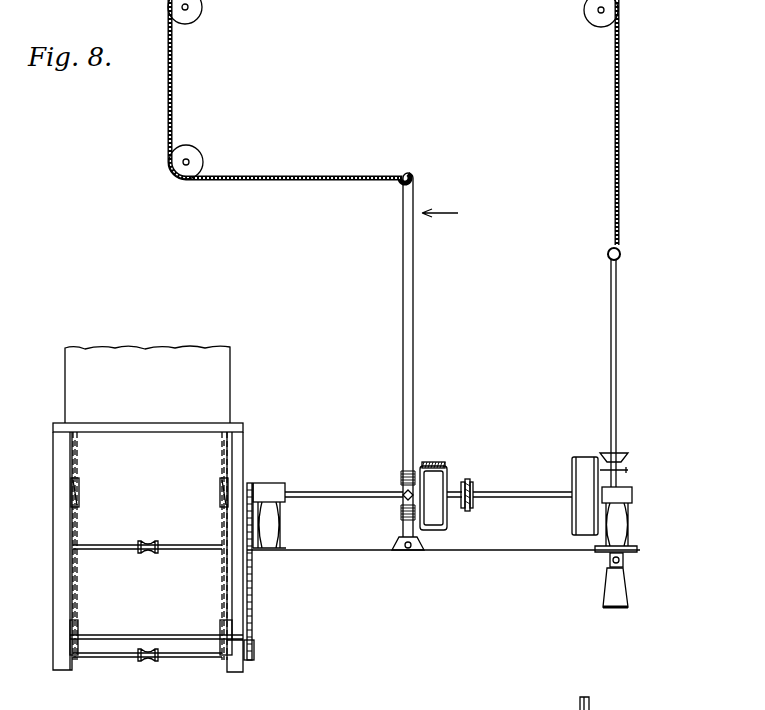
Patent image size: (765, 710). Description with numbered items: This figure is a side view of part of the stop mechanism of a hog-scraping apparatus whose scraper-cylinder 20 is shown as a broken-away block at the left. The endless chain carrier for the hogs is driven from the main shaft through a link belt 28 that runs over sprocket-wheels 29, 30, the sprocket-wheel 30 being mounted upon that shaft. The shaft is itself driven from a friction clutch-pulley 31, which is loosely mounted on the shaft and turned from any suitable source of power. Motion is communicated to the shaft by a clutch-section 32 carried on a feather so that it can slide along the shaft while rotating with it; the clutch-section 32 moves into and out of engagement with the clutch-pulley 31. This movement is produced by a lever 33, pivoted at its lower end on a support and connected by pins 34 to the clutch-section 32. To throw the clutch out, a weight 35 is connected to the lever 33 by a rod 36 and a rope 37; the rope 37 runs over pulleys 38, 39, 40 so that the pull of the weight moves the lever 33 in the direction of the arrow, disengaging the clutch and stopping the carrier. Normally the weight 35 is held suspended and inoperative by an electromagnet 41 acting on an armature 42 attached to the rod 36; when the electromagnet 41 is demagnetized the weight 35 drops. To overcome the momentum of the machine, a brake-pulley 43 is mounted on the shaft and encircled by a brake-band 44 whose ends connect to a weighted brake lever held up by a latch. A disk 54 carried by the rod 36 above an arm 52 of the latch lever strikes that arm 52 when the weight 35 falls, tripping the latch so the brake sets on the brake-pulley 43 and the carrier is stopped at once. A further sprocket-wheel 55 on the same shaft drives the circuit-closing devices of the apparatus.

The scraper-cylinder 20 is at (147, 384).
The link belt 28 is at (253, 592).
The sprocket-wheel 29 is at (255, 661).
The sprocket-wheel 30 is at (258, 484).
The friction clutch-pulley 31 is at (445, 466).
The clutch-section 32 is at (432, 462).
The lever 33 is at (413, 336).
The pins 34 is at (403, 493).
The weight 35 is at (620, 586).
The rod 36 is at (617, 336).
The rope 37 is at (621, 97).
The pulley 38 is at (590, 17).
The pulley 39 is at (190, 20).
The pulley 40 is at (192, 160).
The electromagnet 41 is at (638, 530).
The armature 42 is at (624, 556).
The brake-pulley 43 is at (572, 460).
The brake-band 44 is at (587, 499).
The arm 52 is at (630, 470).
The disk 54 is at (628, 455).
The sprocket-wheel 55 is at (470, 482).